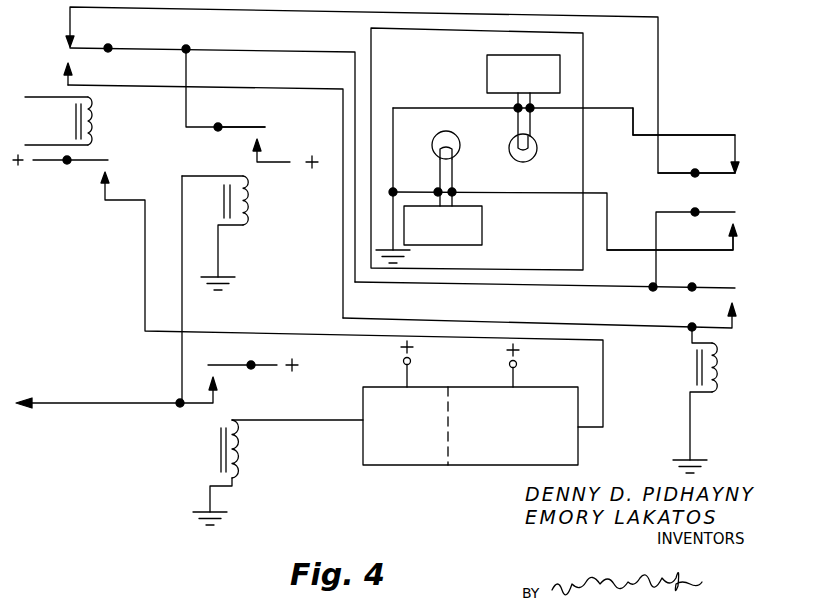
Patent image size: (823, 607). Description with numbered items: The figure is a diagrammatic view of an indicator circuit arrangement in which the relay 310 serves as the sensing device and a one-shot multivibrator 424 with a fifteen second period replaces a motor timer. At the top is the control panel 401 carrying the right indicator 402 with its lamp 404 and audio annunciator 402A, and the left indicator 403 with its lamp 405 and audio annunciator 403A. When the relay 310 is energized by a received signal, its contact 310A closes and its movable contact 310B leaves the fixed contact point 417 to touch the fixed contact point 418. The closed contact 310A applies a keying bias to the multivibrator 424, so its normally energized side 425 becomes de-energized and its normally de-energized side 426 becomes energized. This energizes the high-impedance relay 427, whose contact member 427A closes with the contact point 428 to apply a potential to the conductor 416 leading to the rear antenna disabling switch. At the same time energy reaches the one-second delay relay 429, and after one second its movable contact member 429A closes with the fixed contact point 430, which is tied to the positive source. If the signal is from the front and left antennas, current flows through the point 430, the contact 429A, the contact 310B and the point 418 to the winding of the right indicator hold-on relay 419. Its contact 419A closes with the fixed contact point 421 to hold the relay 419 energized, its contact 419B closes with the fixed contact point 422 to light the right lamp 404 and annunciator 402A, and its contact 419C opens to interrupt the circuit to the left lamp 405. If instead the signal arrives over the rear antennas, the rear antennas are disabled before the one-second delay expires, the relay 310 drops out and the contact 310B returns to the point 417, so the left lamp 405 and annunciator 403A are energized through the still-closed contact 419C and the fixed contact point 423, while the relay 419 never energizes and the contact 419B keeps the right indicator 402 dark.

The relay 310 is at (58, 130).
The contact 310A is at (95, 160).
The movable contact 310B is at (99, 47).
The control panel 401 is at (589, 57).
The right indicator 402 is at (432, 147).
The audio annunciator 402A is at (437, 251).
The left indicator 403 is at (575, 135).
The audio annunciator 403A is at (489, 53).
The lamp 404 is at (440, 160).
The lamp 405 is at (537, 150).
The conductor 416 is at (88, 403).
The fixed contact point 417 is at (66, 28).
The fixed contact point 418 is at (66, 70).
The right indicator hold-on relay 419 is at (770, 379).
The movable contact member 419A is at (737, 289).
The movable contact member 419B is at (744, 205).
The movable contact member 419C is at (734, 177).
The fixed contact point 421 is at (728, 317).
The fixed contact point 422 is at (732, 242).
The fixed contact point 423 is at (734, 158).
The one-shot multivibrator 424 is at (636, 459).
The normally energized side 425 is at (400, 385).
The normally de-energized side 426 is at (506, 385).
The high-impedance relay 427 is at (278, 472).
The contact member 427A is at (221, 365).
The contact point 428 is at (213, 392).
The one-second delay relay 429 is at (241, 233).
The movable contact member 429A is at (246, 127).
The fixed contact point 430 is at (262, 158).